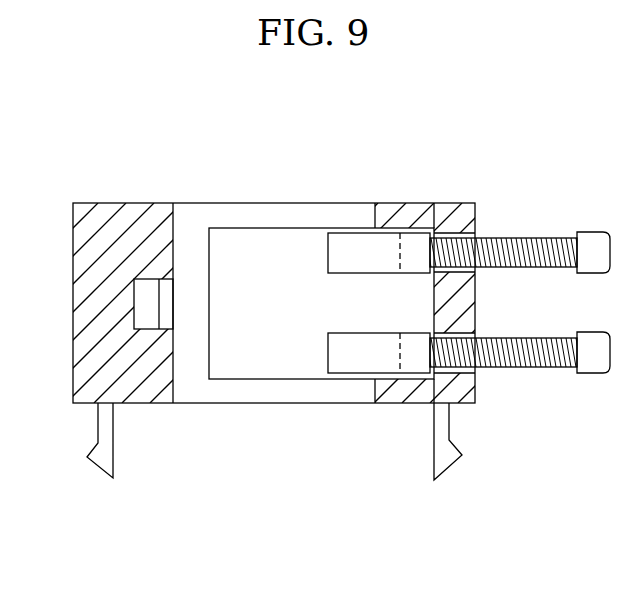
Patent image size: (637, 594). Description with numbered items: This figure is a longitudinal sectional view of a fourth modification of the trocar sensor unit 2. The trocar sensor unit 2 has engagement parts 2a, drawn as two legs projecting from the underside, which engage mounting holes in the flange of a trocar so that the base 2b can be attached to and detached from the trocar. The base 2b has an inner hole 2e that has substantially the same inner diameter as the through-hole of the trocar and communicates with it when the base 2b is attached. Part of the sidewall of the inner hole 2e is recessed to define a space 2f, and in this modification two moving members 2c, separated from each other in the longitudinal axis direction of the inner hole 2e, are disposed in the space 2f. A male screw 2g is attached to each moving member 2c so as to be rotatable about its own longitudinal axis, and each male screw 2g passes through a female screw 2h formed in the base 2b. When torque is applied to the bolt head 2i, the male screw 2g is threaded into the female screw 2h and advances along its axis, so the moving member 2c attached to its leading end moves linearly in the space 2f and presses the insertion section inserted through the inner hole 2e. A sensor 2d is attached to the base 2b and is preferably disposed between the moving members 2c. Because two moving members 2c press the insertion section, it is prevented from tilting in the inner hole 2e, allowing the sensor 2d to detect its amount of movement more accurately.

The trocar sensor unit 2 is at (502, 127).
The engagement part 2a is at (97, 470).
The base 2b is at (478, 308).
The moving member 2c is at (345, 228).
The sensor 2d is at (133, 302).
The inner hole 2e is at (177, 223).
The space 2f is at (246, 380).
The male screw 2g is at (540, 237).
The female screw 2h is at (452, 240).
The bolt head 2i is at (591, 232).